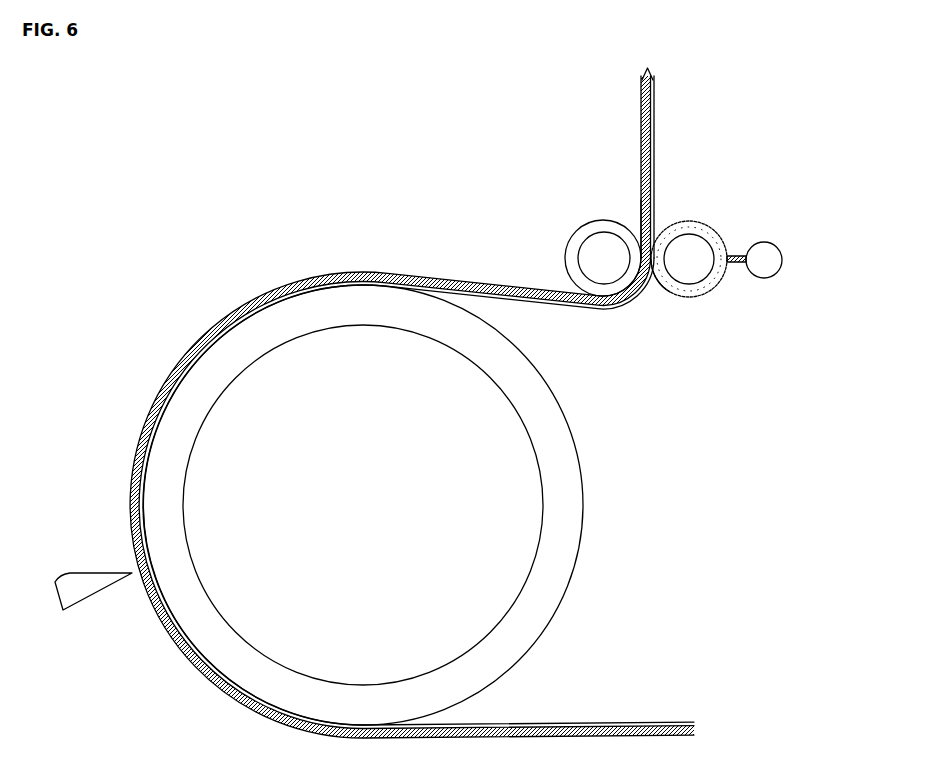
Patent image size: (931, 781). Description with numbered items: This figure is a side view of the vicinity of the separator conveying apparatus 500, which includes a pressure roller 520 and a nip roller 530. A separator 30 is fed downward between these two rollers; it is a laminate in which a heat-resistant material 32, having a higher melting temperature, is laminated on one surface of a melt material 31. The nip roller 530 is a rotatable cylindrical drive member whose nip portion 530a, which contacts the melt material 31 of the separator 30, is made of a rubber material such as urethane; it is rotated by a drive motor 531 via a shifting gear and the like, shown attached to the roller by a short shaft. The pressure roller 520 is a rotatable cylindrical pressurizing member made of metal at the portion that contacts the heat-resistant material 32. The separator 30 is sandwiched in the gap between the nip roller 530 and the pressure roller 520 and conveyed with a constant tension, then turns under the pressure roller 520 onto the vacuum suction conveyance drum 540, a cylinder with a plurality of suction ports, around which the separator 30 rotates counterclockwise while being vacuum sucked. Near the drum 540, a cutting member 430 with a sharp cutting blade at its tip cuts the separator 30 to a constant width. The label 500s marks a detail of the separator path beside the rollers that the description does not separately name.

The separator 30 is at (383, 498).
The melt material 31 is at (160, 388).
The heat-resistant material 32 is at (173, 363).
The cutting member 430 is at (90, 592).
The separator conveying apparatus 500 is at (677, 200).
The transfer sheet surface 500s is at (640, 217).
The pressure roller 520 is at (577, 231).
The nip roller 530 is at (705, 222).
The nip portion 530a is at (650, 300).
The drive motor 531 is at (758, 270).
The vacuum suction conveyance drum 540 is at (517, 657).